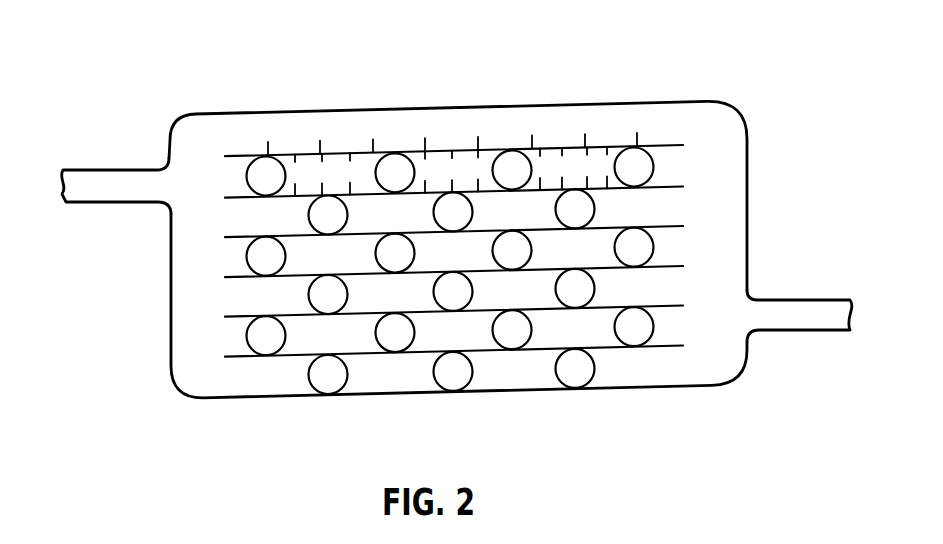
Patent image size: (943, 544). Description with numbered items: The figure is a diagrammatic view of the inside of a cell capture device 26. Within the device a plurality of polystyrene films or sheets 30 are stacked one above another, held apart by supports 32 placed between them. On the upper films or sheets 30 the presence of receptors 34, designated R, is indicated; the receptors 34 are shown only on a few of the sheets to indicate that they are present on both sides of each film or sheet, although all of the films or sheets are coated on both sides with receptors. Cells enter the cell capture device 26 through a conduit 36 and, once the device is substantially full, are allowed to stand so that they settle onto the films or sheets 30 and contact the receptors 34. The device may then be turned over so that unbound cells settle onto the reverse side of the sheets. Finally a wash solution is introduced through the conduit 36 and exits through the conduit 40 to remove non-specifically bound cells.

The cell capture device 26 is at (537, 106).
The polystyrene films or sheets 30 is at (669, 189).
The supports 32 is at (261, 258).
The receptors 34 is at (331, 124).
The conduit 36 is at (100, 203).
The conduit 40 is at (803, 320).